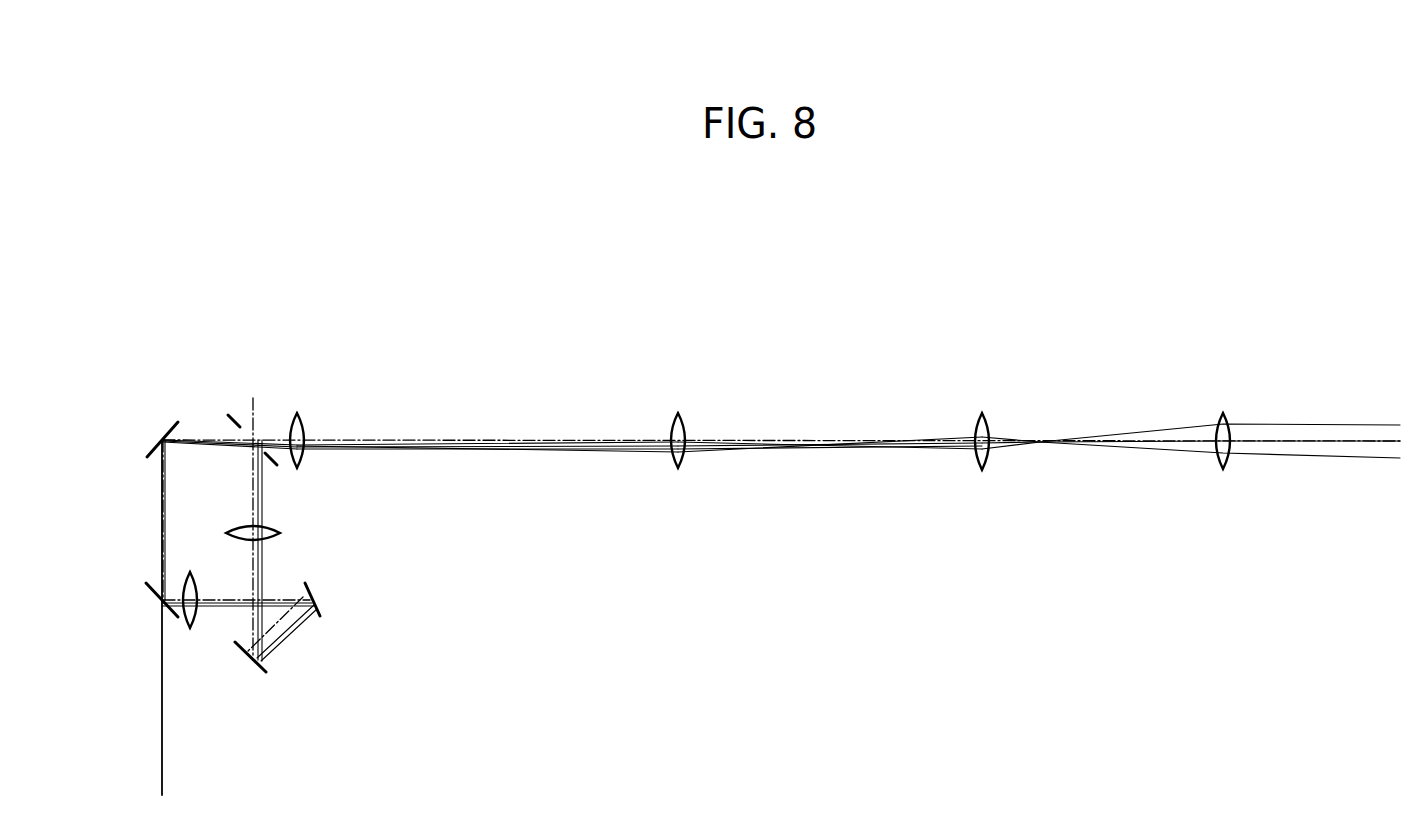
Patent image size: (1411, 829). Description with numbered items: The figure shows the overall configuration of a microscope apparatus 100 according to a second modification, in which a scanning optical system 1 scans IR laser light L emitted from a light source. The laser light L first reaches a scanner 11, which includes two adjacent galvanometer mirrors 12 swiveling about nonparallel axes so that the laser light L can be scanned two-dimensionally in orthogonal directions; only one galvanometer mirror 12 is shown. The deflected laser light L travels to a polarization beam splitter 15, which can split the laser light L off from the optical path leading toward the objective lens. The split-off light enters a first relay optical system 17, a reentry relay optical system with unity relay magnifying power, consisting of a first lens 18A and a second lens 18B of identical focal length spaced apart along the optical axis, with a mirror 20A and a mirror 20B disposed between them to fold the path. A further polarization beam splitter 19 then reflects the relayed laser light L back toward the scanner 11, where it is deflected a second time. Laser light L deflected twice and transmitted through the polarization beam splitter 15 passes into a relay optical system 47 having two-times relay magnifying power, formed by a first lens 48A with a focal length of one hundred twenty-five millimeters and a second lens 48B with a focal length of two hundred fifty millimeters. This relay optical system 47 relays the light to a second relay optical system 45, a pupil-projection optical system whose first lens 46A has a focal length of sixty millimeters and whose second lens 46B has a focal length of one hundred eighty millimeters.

The microscope apparatus 100 is at (1218, 222).
The scanning optical system 1 is at (163, 342).
The scanner 11 is at (141, 431).
The galvanometer mirror 12 is at (177, 427).
The polarization beam splitter 15 is at (236, 412).
The first relay optical system 17 is at (317, 662).
The first lens 18A is at (280, 533).
The second lens 18B is at (190, 628).
The polarization beam splitter 19 is at (152, 597).
The mirror 20A is at (262, 677).
The mirror 20B is at (323, 613).
The second relay optical system 45 is at (1247, 322).
The first lens 46A is at (982, 413).
The second lens 46B is at (1223, 413).
The relay optical system 47 is at (702, 322).
The first lens 48A is at (297, 413).
The second lens 48B is at (680, 413).
The laser light L is at (162, 722).